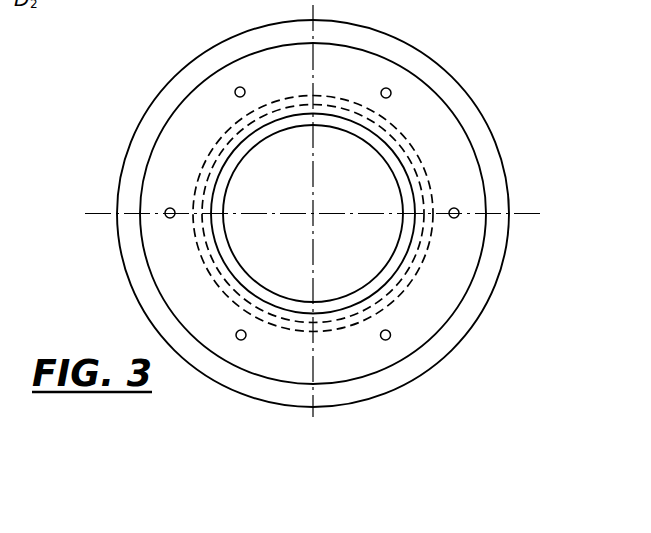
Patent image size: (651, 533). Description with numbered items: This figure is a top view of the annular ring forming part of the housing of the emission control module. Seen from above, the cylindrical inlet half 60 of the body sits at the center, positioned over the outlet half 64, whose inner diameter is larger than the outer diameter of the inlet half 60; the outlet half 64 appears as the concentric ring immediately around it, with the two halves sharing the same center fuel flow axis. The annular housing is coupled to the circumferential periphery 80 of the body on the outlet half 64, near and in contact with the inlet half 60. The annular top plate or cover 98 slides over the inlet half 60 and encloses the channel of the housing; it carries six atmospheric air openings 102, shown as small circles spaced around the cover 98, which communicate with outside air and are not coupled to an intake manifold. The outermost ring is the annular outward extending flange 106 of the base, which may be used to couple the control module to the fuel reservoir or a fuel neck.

The inlet half 60 is at (223, 162).
The outlet half 64 is at (297, 328).
The circumferential periphery 80 is at (164, 0).
The annular top plate or cover 98 is at (477, 145).
The atmospheric air openings 102 is at (382, 88).
The outward extending flange 106 is at (432, 367).